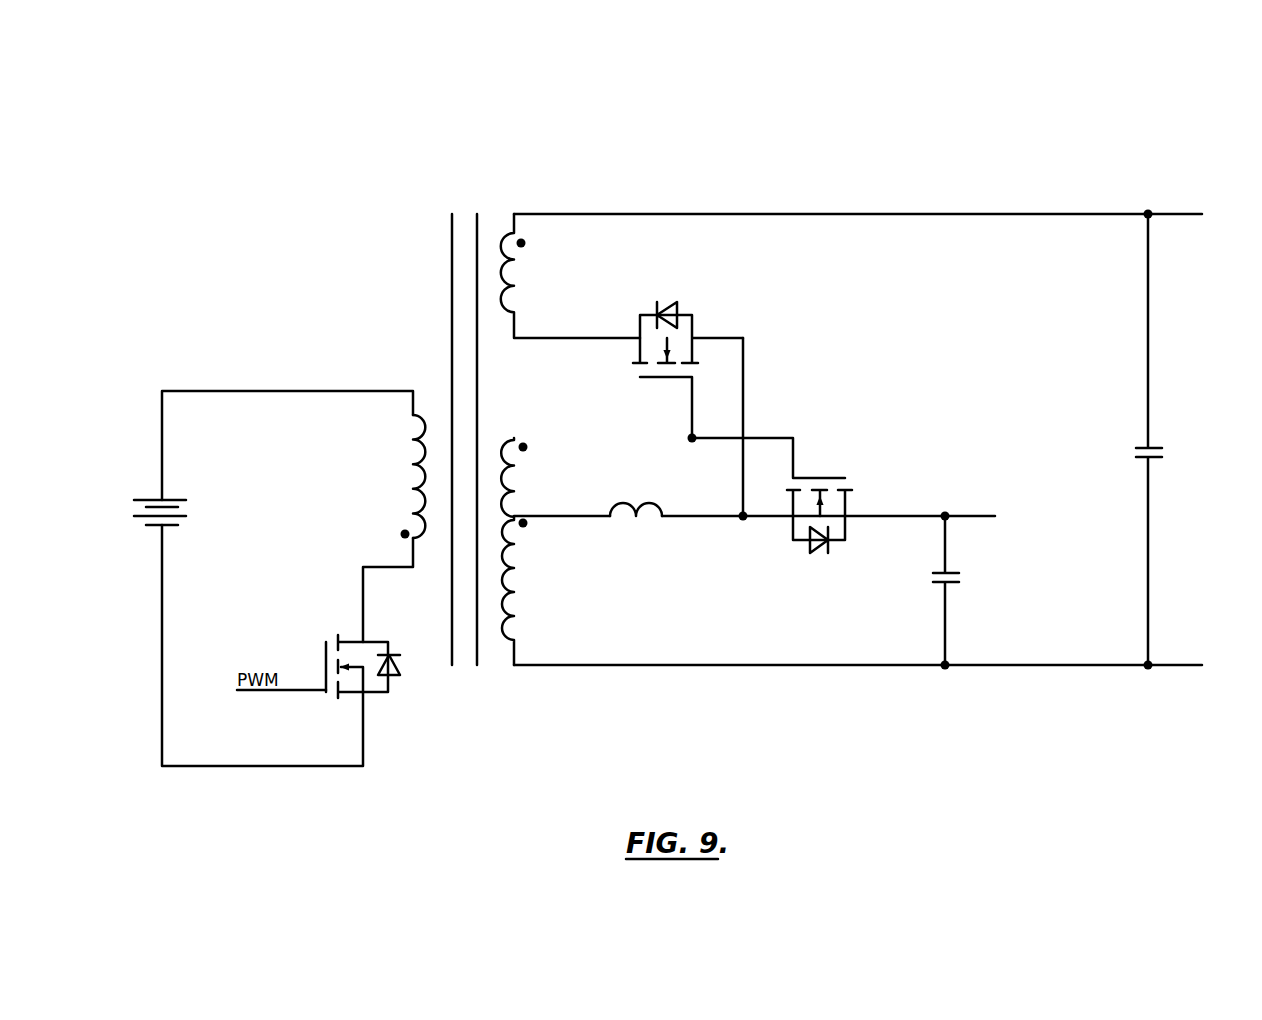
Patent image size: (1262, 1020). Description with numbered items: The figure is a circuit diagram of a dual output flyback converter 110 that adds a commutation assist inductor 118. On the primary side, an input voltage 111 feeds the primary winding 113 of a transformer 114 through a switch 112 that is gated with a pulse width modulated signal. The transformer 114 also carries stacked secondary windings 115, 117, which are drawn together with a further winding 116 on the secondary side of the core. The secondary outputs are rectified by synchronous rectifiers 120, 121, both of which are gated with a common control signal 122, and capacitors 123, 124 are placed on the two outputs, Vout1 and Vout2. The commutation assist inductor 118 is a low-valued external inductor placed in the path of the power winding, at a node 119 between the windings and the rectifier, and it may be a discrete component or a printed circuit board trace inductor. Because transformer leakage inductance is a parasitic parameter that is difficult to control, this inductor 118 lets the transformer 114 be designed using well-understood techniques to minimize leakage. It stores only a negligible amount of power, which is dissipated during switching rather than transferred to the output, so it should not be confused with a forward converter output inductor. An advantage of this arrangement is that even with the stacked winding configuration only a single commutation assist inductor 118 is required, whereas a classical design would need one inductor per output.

The dual output flyback converter 110 is at (835, 143).
The input voltage 111 is at (128, 460).
The switch 112 is at (398, 700).
The primary winding 113 is at (392, 455).
The transformer 114 is at (406, 260).
The secondary winding 115 is at (543, 612).
The second secondary winding 116 is at (542, 493).
The secondary winding 117 is at (523, 263).
The commutation assist inductor 118 is at (628, 520).
The node 119 is at (739, 522).
The synchronous rectifier 120 is at (707, 310).
The synchronous rectifier 121 is at (872, 483).
The common control signal 122 is at (770, 438).
The capacitor 123 is at (933, 580).
The capacitor 124 is at (1136, 457).